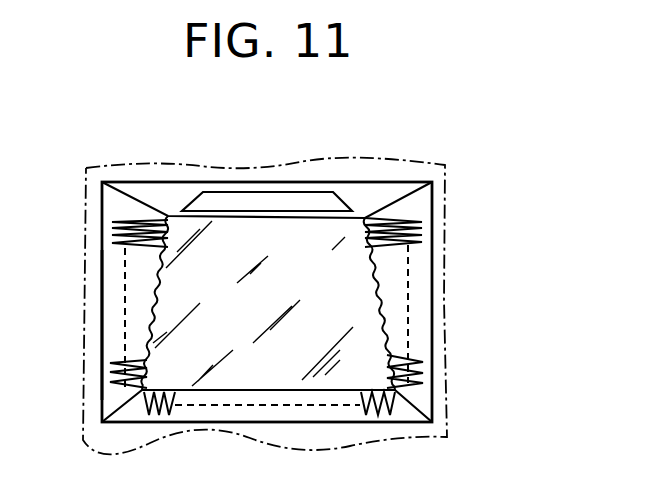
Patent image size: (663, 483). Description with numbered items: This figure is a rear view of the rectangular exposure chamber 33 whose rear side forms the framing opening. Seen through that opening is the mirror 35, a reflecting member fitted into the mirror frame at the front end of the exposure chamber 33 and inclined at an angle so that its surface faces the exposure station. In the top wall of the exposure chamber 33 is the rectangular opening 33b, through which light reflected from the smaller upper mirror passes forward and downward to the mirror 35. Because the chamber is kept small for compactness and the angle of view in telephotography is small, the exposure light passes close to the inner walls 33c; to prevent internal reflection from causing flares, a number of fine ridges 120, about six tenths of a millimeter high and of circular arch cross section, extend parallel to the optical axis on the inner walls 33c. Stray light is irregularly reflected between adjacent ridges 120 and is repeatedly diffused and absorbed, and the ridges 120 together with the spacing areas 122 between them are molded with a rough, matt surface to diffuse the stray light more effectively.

The exposure chamber 33 is at (313, 267).
The rectangular opening 33b is at (257, 200).
The inner walls 33c is at (110, 330).
The mirror 35 is at (365, 309).
The ridges 120 is at (168, 246).
The spacing areas 122 is at (420, 240).